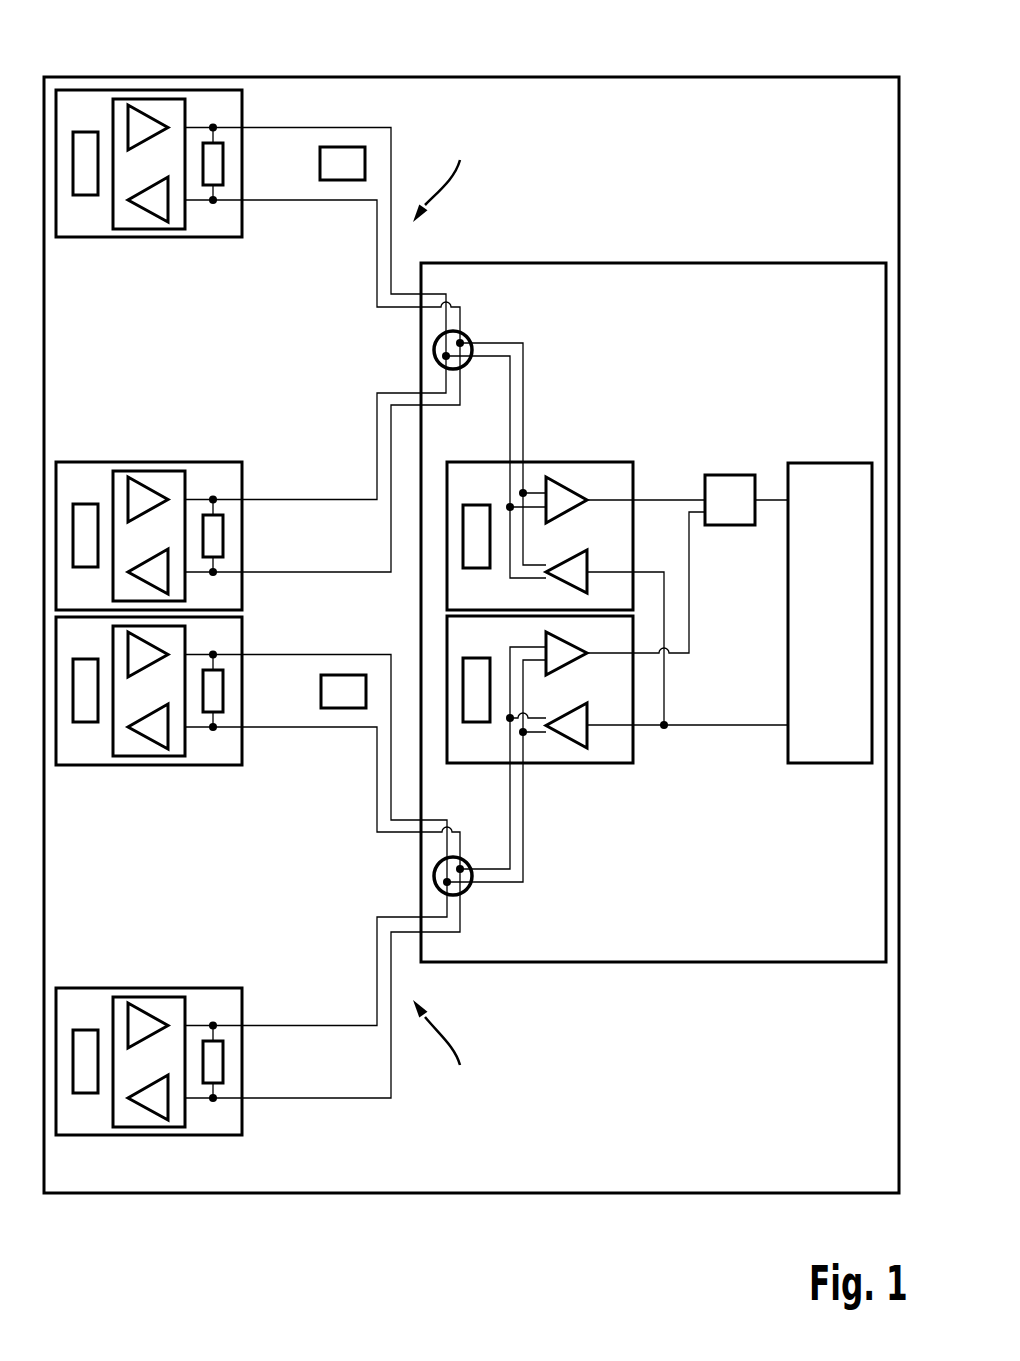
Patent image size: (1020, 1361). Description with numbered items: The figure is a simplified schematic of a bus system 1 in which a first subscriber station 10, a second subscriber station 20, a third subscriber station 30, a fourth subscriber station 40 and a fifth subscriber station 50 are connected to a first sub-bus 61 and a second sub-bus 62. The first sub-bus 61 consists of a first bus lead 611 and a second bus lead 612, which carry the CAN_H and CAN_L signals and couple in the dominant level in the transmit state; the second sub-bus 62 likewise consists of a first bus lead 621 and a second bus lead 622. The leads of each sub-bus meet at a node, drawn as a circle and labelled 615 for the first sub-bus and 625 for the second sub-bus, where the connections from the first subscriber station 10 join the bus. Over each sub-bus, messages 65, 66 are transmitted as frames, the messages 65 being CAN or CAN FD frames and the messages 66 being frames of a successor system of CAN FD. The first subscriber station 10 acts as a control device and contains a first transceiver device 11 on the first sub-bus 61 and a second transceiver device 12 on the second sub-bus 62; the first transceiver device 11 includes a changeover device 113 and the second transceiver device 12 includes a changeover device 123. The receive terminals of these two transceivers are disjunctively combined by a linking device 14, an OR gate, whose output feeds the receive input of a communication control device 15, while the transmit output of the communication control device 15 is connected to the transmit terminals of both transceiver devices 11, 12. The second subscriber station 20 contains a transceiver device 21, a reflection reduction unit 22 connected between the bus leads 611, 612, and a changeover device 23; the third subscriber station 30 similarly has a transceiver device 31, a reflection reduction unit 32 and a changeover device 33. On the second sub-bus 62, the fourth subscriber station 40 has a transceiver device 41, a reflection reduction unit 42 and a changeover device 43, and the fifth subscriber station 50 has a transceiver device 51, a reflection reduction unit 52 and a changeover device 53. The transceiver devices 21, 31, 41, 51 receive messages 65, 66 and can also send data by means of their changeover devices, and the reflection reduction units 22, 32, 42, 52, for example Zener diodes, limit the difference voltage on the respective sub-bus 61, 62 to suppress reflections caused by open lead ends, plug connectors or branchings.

The bus system 1 is at (627, 76).
The first subscriber station 10 is at (652, 262).
The first transceiver device 11 is at (555, 462).
The second transceiver device 12 is at (555, 763).
The linking device 14 is at (728, 475).
The communication control device 15 is at (830, 463).
The second subscriber station 20 is at (195, 90).
The transceiver device 21 is at (147, 98).
The reflection reduction unit 22 is at (223, 163).
The changeover device 23 is at (83, 132).
The third subscriber station 30 is at (198, 462).
The transceiver device 31 is at (147, 470).
The reflection reduction unit 32 is at (224, 535).
The changeover device 33 is at (84, 504).
The fourth subscriber station 40 is at (196, 765).
The transceiver device 41 is at (147, 756).
The reflection reduction unit 42 is at (224, 690).
The changeover device 43 is at (84, 722).
The fifth subscriber station 50 is at (195, 988).
The transceiver device 51 is at (147, 997).
The reflection reduction unit 52 is at (223, 1063).
The changeover device 53 is at (83, 1030).
The first sub-bus 61 is at (365, 353).
The second sub-bus 62 is at (365, 873).
The message 65 is at (342, 147).
The message 66 is at (344, 708).
The changeover device 113 is at (475, 505).
The changeover device 123 is at (475, 722).
The first bus lead 611 is at (330, 499).
The second bus lead 612 is at (332, 574).
The first bus node 615 is at (434, 349).
The first bus lead 621 is at (330, 1025).
The second bus lead 622 is at (330, 1100).
The second bus node 625 is at (434, 875).